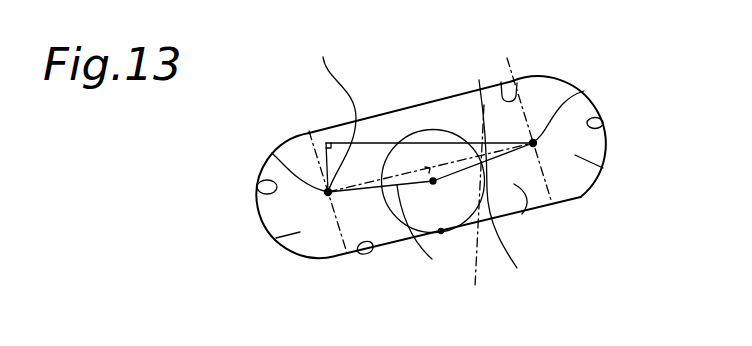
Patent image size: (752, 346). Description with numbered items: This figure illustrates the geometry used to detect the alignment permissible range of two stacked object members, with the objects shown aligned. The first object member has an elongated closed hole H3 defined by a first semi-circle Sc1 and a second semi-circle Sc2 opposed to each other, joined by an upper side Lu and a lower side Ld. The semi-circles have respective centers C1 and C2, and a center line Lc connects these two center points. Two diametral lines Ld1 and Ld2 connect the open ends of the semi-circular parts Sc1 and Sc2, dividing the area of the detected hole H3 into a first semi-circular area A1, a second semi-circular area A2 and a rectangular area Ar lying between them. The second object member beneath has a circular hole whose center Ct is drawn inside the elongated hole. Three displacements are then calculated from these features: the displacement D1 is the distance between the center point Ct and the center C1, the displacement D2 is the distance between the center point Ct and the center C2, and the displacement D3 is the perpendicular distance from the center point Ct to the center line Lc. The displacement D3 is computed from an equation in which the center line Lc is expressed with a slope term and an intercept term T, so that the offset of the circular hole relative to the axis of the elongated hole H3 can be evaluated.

The intercept term of center line equation T is at (332, 111).
The upper side of elongated hole Lu is at (397, 109).
The center line Lc is at (492, 150).
The first diametral line Ld1 is at (508, 60).
The second diametral line Ld2 is at (326, 112).
The center of first semi-circle C1 is at (584, 91).
The center of second semi-circle C2 is at (272, 153).
The first semi-circle Sc1 is at (603, 123).
The second semi-circle Sc2 is at (257, 188).
The first semi-circular area A1 is at (603, 168).
The second semi-circular area A2 is at (276, 238).
The rectangular area Ar is at (533, 223).
The center of circular hole Ct is at (430, 182).
The first displacement D1 is at (509, 186).
The second displacement D2 is at (426, 235).
The third displacement D3 is at (476, 209).
The lower side of elongated hole Ld is at (388, 249).
The elongated closed hole H3 is at (358, 252).